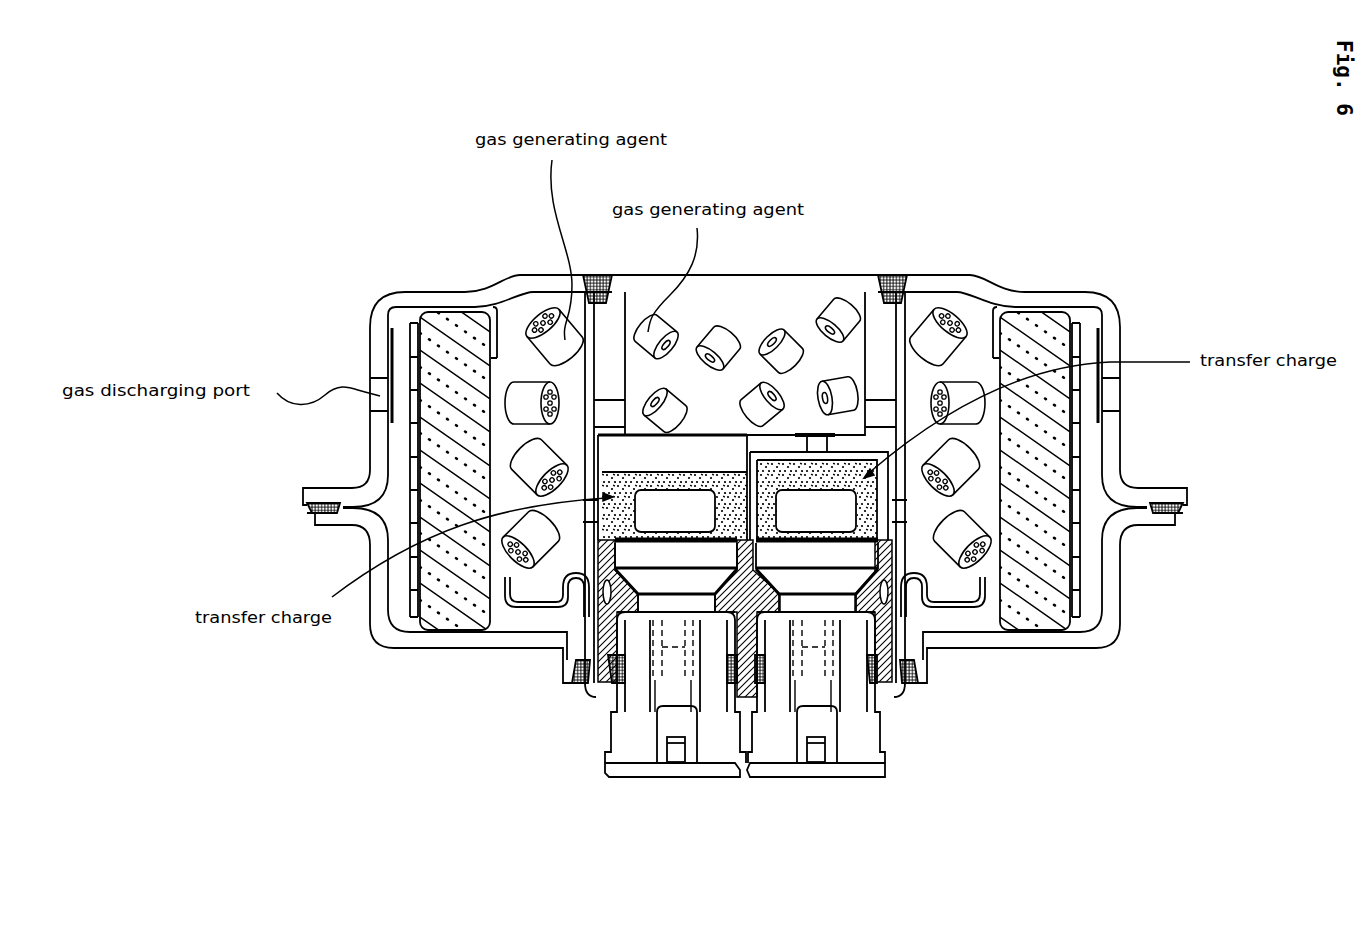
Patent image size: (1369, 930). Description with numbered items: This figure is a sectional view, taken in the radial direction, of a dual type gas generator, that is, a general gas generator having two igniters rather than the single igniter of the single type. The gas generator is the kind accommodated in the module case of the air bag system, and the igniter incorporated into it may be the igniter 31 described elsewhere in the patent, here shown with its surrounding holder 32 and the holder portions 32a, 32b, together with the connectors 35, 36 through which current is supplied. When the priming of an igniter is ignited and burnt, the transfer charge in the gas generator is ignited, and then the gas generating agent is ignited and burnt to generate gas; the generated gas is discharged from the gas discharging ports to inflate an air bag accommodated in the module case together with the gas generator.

The igniter 31 is at (655, 560).
The holder 32 is at (885, 600).
The holder first portion 32a is at (631, 780).
The holder second portion 32b is at (722, 780).
The connector 35 is at (664, 780).
The connector 36 is at (817, 780).